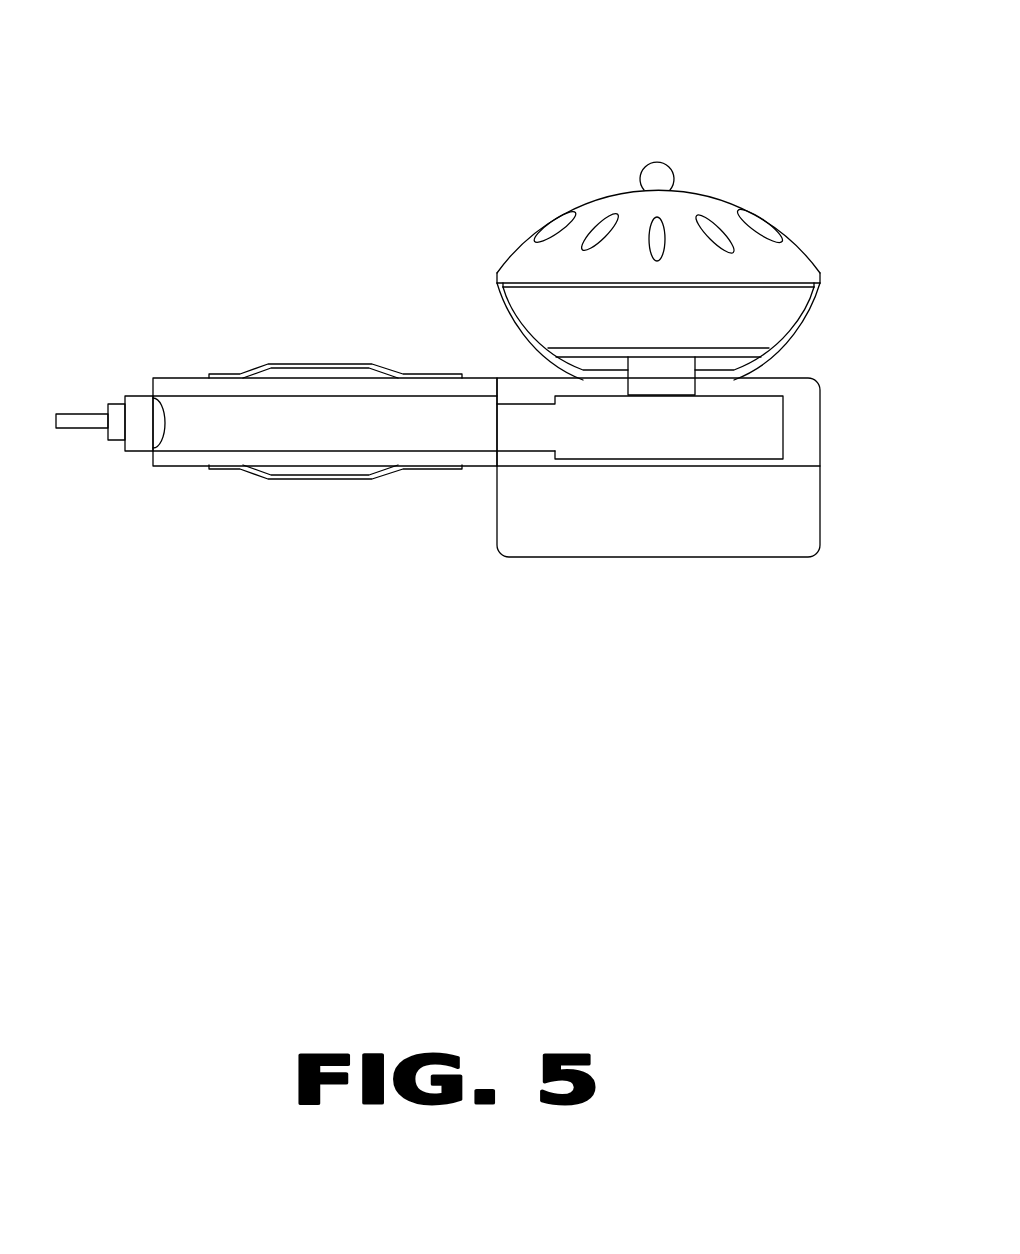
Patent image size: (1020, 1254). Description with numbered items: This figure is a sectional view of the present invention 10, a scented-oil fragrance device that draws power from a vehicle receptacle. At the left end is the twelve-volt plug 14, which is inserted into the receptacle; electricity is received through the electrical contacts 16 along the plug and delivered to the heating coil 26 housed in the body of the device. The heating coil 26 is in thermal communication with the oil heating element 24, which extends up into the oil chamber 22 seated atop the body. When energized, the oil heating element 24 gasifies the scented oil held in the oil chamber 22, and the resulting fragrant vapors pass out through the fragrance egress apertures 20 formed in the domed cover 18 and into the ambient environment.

The present invention 10 is at (471, 328).
The 12 VAC plug 14 is at (187, 464).
The electrical contacts 16 is at (307, 473).
The cover 18 is at (615, 144).
The fragrance egress apertures 20 is at (613, 218).
The oil chamber 22 is at (780, 325).
The oil heating element 24 is at (670, 350).
The heating coil 26 is at (673, 435).